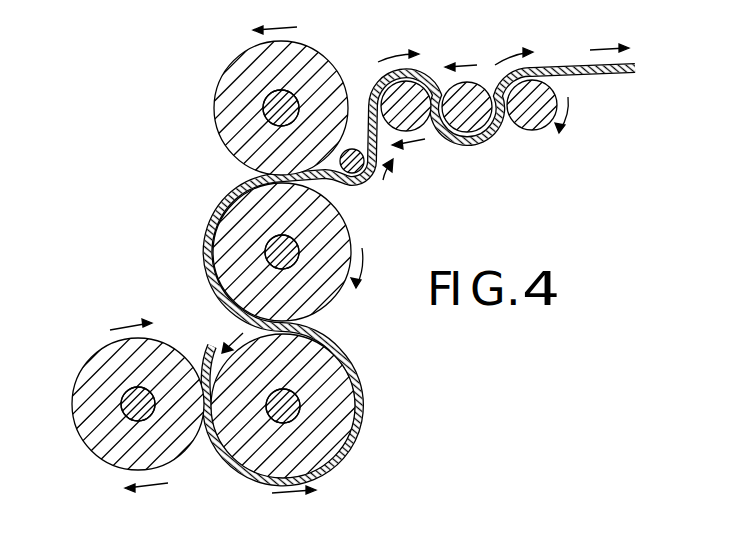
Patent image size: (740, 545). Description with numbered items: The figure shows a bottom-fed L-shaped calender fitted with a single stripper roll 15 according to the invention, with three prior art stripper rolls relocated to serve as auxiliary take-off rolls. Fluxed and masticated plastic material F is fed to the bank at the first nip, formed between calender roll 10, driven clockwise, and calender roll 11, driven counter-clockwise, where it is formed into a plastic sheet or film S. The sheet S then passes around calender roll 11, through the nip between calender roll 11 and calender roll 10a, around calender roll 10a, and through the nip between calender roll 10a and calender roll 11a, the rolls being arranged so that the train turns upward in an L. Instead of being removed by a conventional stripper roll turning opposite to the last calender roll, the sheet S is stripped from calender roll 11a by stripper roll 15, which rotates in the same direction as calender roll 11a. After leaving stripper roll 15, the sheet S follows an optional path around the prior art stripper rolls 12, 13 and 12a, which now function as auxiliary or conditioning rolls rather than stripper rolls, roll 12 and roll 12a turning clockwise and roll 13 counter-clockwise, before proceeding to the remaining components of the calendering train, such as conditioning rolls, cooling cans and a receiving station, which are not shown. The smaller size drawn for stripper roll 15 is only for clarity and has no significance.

The calender roll 10 is at (92, 391).
The calender roll 10a is at (236, 242).
The calender roll 11 is at (340, 391).
The calender roll 11a is at (232, 100).
The stripper roll 12 is at (418, 90).
The stripper roll 12a is at (534, 118).
The stripper roll 13 is at (471, 122).
The stripper roll 15 is at (360, 170).
The plastic sheet S is at (600, 74).
The plastic material F is at (213, 367).